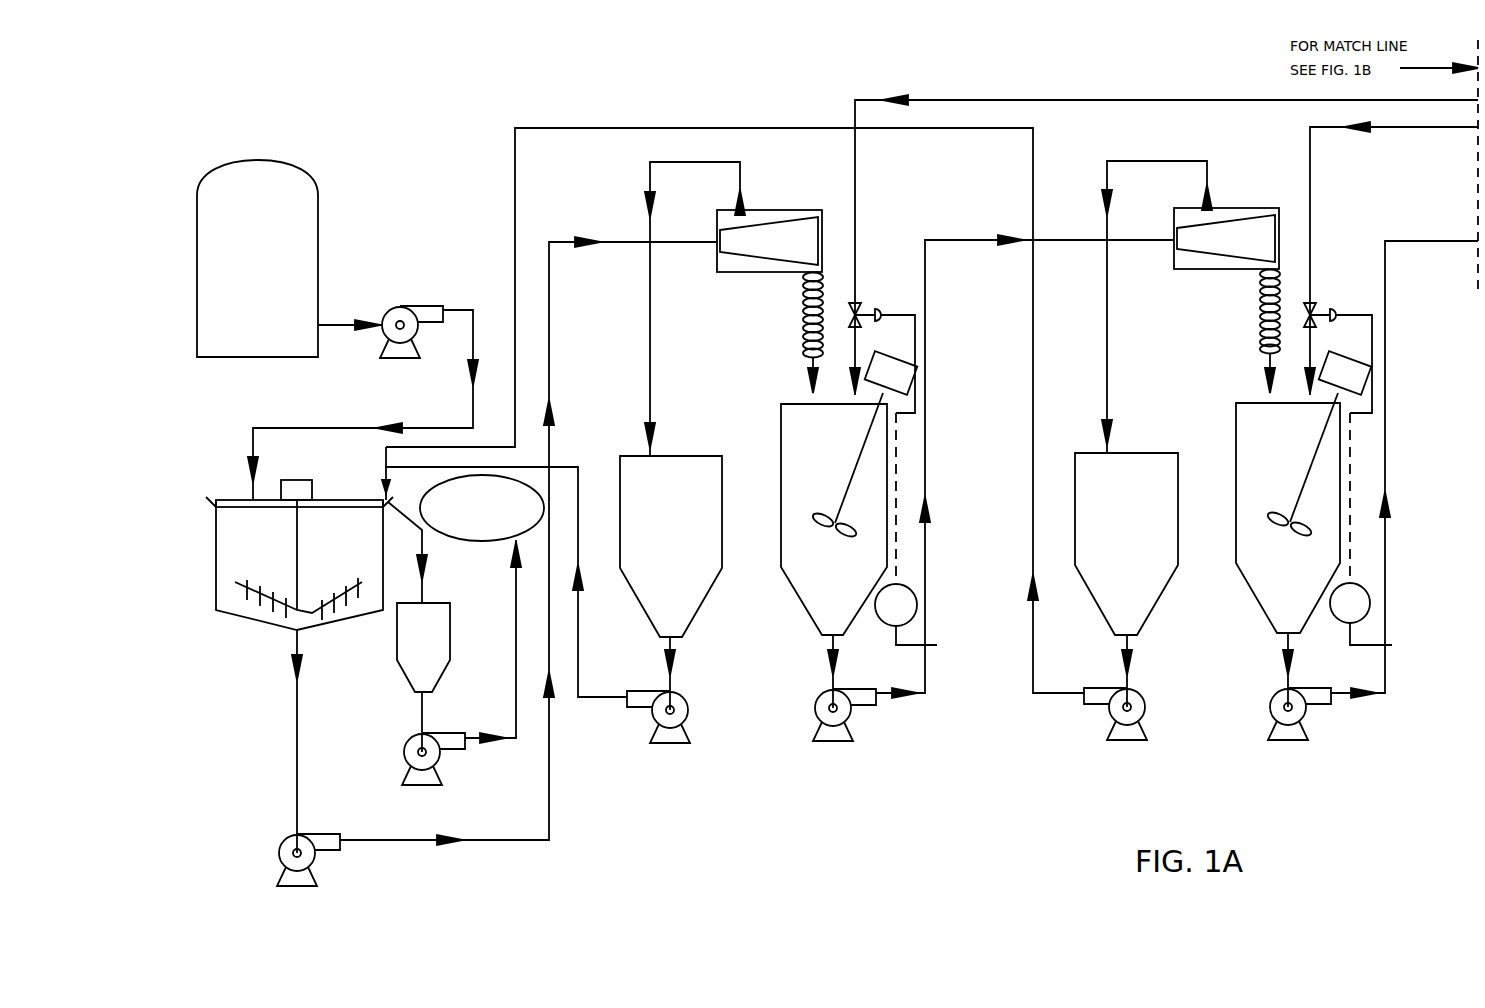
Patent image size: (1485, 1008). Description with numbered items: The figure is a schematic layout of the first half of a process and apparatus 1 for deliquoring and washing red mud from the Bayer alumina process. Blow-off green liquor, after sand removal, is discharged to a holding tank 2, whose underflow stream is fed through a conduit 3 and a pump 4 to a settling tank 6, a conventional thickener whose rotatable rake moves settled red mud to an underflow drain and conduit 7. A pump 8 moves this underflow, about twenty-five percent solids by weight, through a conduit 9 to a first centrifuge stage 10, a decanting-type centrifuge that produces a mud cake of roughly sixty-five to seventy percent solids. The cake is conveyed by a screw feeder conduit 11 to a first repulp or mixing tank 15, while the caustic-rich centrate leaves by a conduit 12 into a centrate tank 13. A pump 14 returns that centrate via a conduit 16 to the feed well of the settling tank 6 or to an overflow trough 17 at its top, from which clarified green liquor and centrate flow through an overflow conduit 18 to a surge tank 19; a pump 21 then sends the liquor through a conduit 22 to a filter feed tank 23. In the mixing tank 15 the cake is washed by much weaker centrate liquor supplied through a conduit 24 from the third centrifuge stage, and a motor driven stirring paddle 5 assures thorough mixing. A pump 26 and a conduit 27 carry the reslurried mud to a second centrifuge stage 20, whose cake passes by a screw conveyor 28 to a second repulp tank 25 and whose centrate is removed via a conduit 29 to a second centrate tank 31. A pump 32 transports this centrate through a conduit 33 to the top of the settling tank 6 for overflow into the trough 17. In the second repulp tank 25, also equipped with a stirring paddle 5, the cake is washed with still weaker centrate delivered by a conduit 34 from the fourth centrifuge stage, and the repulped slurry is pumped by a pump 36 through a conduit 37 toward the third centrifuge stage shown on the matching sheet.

The process and apparatus for deliquoring and washing red mud 1 is at (1200, 75).
The holding tank 2 is at (296, 165).
The conduit 3 is at (338, 322).
The pump 4 is at (405, 306).
The motor driven stirring paddle 5 is at (862, 437).
The settling tank 6 is at (232, 612).
The underflow drain and conduit 7 is at (297, 728).
The pump 8 is at (277, 857).
The conduit 9 is at (540, 840).
The first centrifuge stage 10 is at (757, 210).
The screw feeder conduit 11 is at (800, 302).
The conduit 12 is at (650, 318).
The centrate tank 13 is at (700, 458).
The pump 14 is at (660, 740).
The first repulp or mixing tank 15 is at (783, 580).
The conduit 16 is at (600, 698).
The overflow trough 17 is at (228, 492).
The overflow conduit 18 is at (421, 578).
The surge tank 19 is at (397, 665).
The second centrifuge stage 20 is at (1245, 208).
The pump 21 is at (405, 750).
The conduit 22 is at (516, 635).
The filter feed tank 23 is at (488, 543).
The conduit 24 is at (932, 100).
The second repulp tank 25 is at (1240, 578).
The pump 26 is at (822, 737).
The conduit 27 is at (930, 440).
The screw conveyor 28 is at (1258, 305).
The conduit 29 is at (1107, 292).
The second centrate tank 31 is at (1150, 455).
The pump 32 is at (1118, 740).
The conduit 33 is at (515, 228).
The conduit 34 is at (1440, 127).
The pump 36 is at (1283, 740).
The conduit 37 is at (1455, 241).